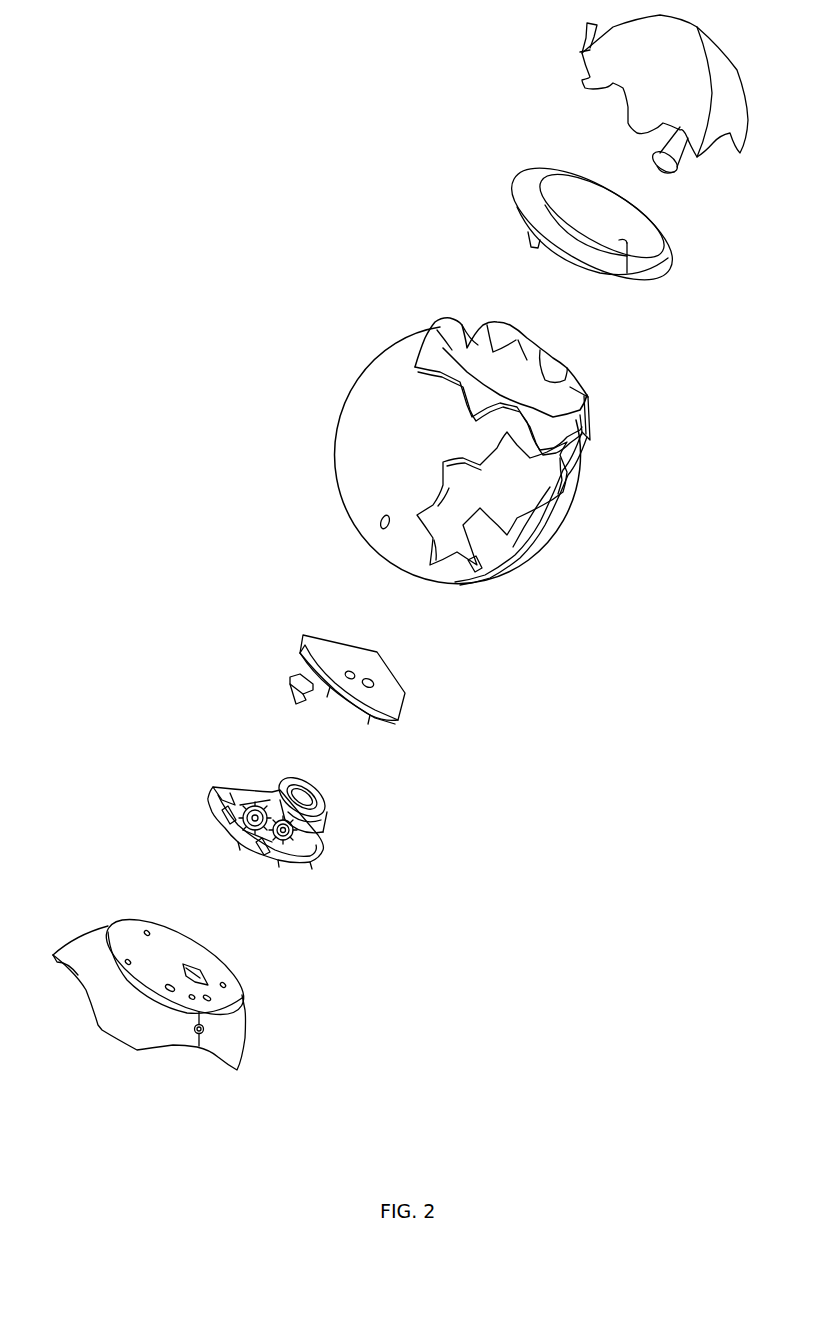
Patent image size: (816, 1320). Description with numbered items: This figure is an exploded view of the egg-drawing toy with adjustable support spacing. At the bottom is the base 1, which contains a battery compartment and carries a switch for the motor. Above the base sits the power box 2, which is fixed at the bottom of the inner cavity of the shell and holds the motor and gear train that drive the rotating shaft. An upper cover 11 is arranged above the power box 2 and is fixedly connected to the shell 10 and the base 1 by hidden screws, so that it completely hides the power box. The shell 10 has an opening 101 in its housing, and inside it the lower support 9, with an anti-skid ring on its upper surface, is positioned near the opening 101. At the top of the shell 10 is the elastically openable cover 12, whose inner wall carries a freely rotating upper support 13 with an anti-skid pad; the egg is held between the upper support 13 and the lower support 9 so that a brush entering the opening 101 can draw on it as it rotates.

The base 1 is at (108, 1002).
The power box 2 is at (225, 823).
The lower support 9 is at (277, 797).
The shell 10 is at (355, 485).
The opening 101 is at (480, 503).
The upper cover 11 is at (532, 200).
The cover 12 is at (627, 67).
The upper support 13 is at (665, 162).